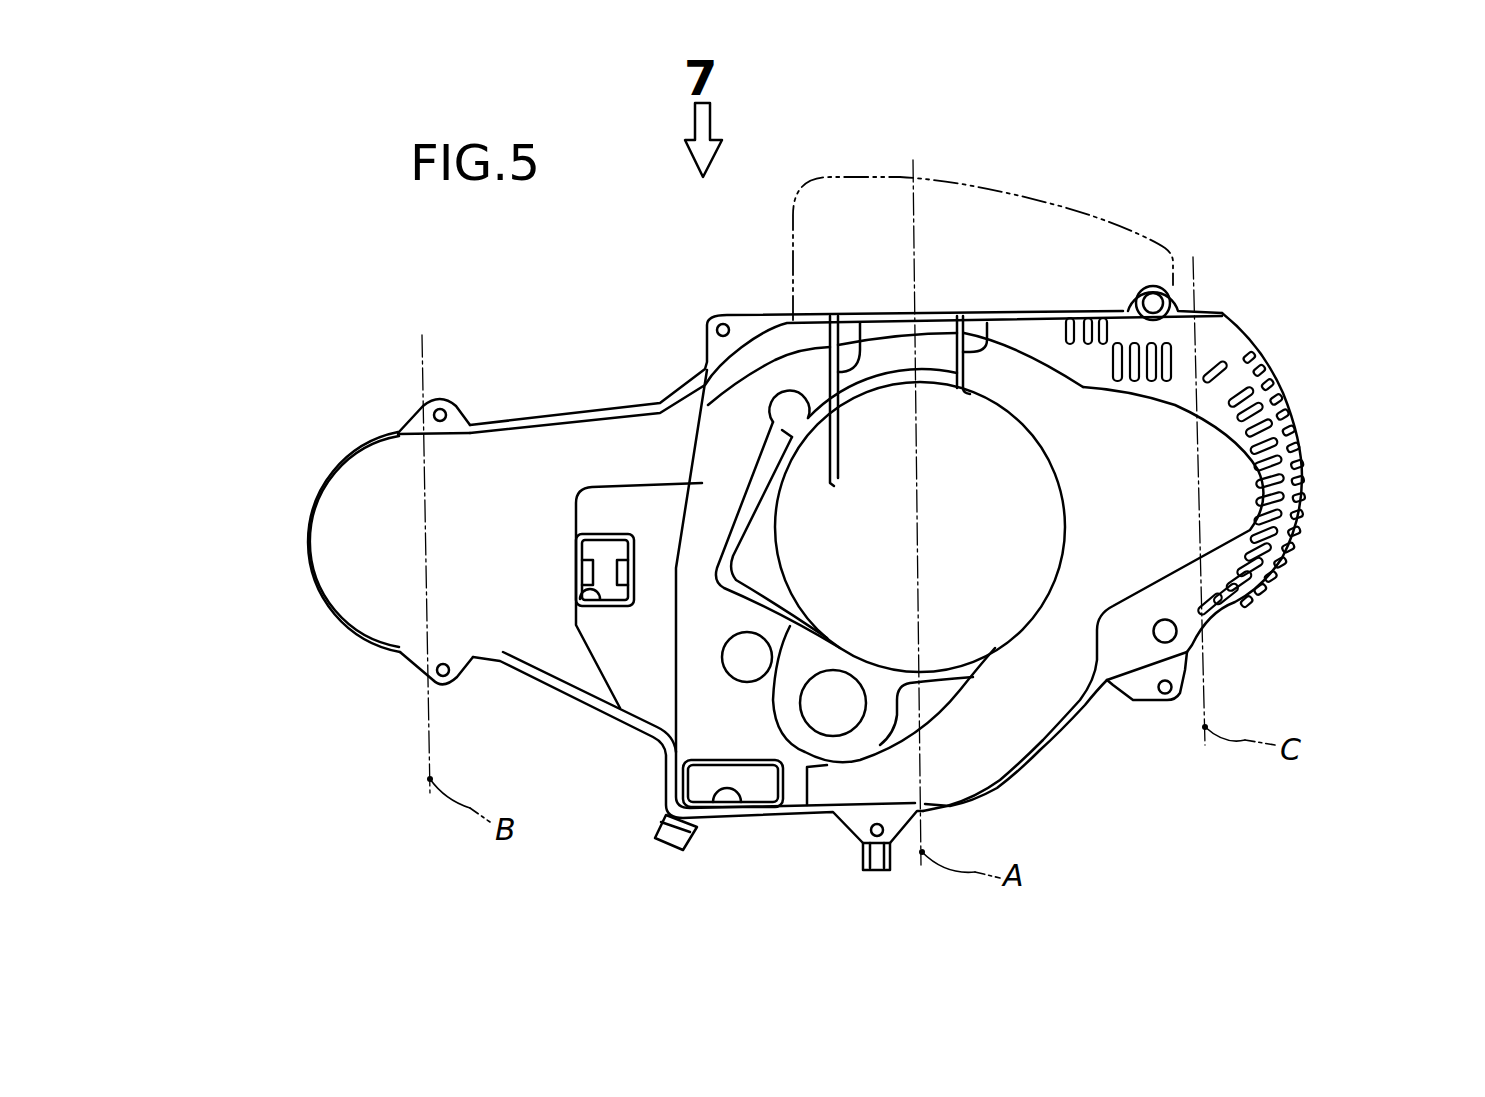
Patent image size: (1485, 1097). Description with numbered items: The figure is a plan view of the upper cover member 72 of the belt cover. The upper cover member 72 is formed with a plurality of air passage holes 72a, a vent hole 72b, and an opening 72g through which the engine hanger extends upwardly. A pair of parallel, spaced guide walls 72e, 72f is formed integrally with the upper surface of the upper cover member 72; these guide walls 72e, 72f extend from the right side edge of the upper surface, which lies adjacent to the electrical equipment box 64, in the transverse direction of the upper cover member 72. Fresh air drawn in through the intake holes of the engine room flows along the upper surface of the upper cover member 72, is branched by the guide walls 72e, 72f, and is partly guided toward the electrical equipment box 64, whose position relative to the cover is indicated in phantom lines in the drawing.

The upper cover member 72 is at (306, 262).
The electrical equipment box 64 is at (1015, 183).
The air passage holes 72a is at (1092, 323).
The vent hole 72b is at (741, 795).
The guide wall 72e is at (857, 340).
The guide wall 72f is at (986, 340).
The opening 72g is at (577, 590).